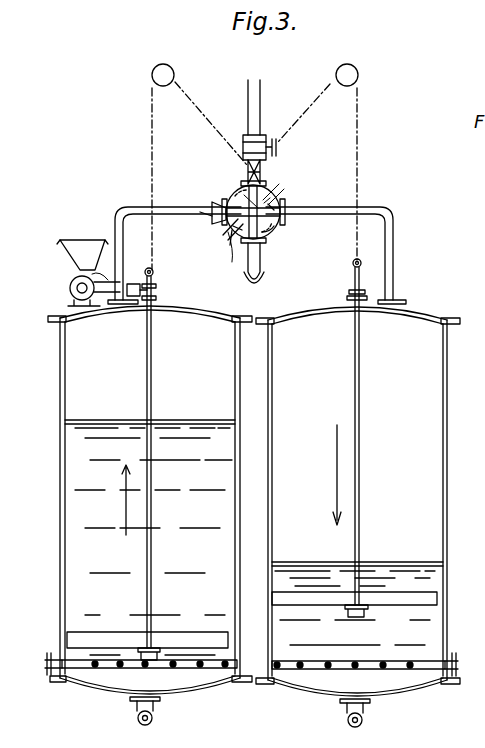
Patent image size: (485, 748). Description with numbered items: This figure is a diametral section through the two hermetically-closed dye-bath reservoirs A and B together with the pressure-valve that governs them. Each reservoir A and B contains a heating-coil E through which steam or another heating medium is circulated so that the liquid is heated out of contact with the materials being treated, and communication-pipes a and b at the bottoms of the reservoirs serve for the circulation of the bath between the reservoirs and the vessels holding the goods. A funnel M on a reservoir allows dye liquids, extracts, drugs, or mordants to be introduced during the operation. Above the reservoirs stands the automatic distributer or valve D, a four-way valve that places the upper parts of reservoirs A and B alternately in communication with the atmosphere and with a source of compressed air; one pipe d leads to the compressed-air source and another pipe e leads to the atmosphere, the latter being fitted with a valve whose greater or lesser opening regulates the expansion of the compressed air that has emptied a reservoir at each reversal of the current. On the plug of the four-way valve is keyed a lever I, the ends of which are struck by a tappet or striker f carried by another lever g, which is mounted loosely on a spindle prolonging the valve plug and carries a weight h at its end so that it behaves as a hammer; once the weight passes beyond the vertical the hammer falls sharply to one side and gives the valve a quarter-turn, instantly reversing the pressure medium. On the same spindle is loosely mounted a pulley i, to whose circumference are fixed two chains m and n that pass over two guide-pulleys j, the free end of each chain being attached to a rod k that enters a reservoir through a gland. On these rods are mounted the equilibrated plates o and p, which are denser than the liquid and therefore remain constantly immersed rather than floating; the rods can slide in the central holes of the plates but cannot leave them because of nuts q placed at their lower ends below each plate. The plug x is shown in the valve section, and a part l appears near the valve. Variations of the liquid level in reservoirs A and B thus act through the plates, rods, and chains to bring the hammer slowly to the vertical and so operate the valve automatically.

The guide-pulleys j is at (153, 80).
The chain m is at (215, 126).
The chain n is at (286, 128).
The pipe e is at (264, 96).
The automatic distributer or valve D is at (280, 178).
The lever I is at (288, 196).
The valve plug x is at (226, 192).
The lever g is at (212, 212).
The weight h is at (208, 222).
The tappet or striker f is at (222, 240).
The valve port l is at (228, 262).
The pulley i is at (276, 234).
The pipe d is at (262, 266).
The funnel M is at (92, 246).
The reservoir B is at (150, 503).
The reservoir A is at (358, 505).
The equilibrated plate o is at (194, 640).
The equilibrated plate p is at (388, 604).
The nuts q is at (152, 664).
The heating-coil E is at (122, 669).
The rod k is at (146, 362).
The communication-pipe a is at (364, 714).
The communication-pipe b is at (154, 712).